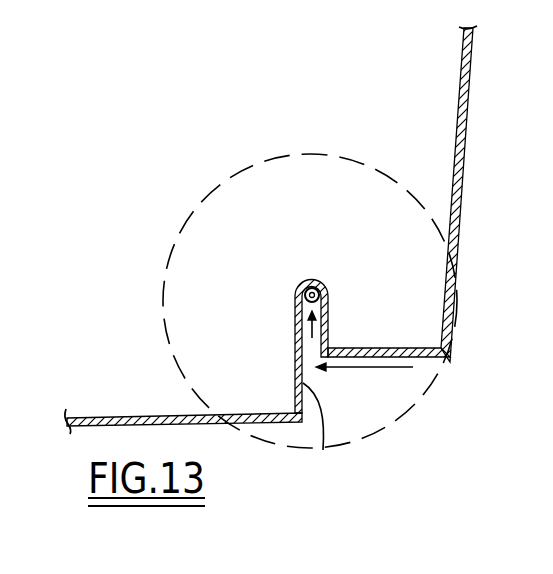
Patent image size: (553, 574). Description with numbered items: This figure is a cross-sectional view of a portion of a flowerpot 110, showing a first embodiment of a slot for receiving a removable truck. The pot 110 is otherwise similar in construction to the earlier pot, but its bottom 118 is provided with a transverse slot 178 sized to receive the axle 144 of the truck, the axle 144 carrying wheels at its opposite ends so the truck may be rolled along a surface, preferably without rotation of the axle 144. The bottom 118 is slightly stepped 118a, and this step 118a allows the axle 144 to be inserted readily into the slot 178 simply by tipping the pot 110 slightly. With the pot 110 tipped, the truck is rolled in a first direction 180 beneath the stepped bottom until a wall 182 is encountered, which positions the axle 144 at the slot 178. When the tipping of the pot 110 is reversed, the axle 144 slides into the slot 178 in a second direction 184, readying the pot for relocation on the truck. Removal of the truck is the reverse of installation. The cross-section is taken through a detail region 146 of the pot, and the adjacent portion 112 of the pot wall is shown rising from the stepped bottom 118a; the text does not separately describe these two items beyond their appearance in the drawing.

The flowerpot 110 is at (183, 95).
The first plate 112 is at (458, 183).
The bottom 118 is at (200, 423).
The stepped portion of bottom 118a is at (412, 360).
The axle 144 is at (316, 287).
The detail region 146 is at (403, 414).
The transverse slot 178 is at (291, 328).
The first direction 180 is at (363, 370).
The wall 182 is at (323, 450).
The second direction 184 is at (329, 335).